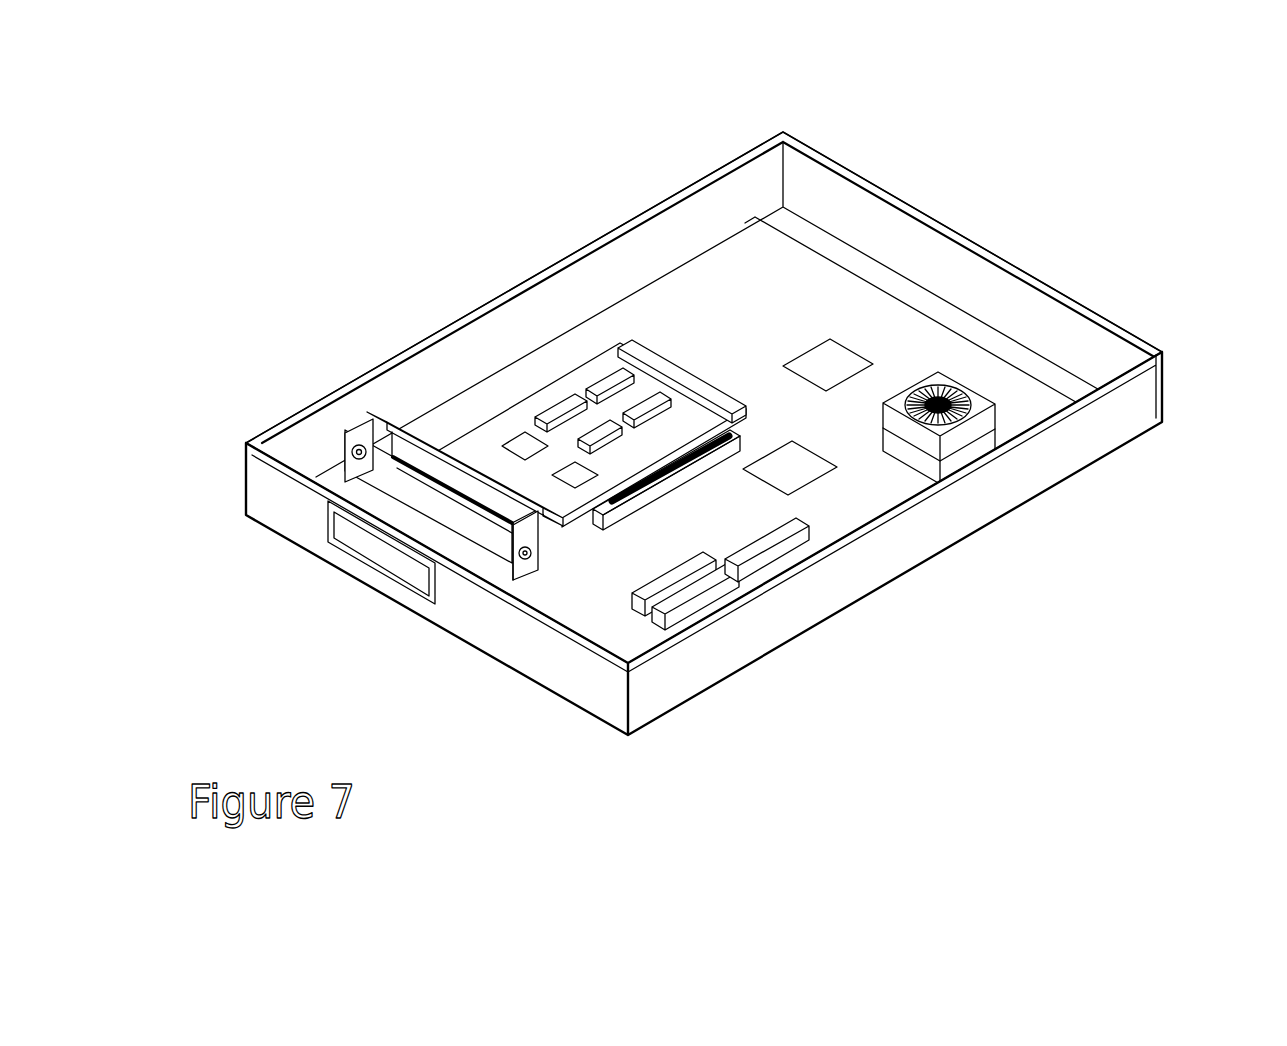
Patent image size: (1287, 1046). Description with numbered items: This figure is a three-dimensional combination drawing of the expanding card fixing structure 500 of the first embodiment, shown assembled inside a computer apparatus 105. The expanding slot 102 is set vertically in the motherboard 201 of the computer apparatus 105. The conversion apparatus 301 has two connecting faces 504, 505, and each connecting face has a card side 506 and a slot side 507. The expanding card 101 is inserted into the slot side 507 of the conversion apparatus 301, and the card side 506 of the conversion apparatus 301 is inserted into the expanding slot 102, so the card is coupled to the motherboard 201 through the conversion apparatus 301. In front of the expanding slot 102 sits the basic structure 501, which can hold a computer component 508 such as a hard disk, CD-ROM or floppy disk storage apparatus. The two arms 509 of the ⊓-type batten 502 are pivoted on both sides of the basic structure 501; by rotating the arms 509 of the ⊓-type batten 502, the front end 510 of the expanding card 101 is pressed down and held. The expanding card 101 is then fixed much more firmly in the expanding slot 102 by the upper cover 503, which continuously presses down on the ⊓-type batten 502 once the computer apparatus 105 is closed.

The expanding card fixing structure 500 is at (1094, 113).
The computer apparatus 105 is at (975, 235).
The motherboard 201 is at (1013, 392).
The upper cover 503 is at (1163, 383).
The expanding card 101 is at (543, 387).
The conversion apparatus 301 is at (770, 400).
The front end 510 is at (696, 440).
The ⊓-type batten 502 is at (460, 443).
The arms 509 is at (370, 443).
The connecting face 505 is at (740, 452).
The card side 506 is at (741, 460).
The basic structure 501 is at (375, 498).
The computer component 508 is at (367, 548).
The connecting face 504 is at (547, 549).
The slot side 507 is at (569, 564).
The expanding slot 102 is at (668, 495).